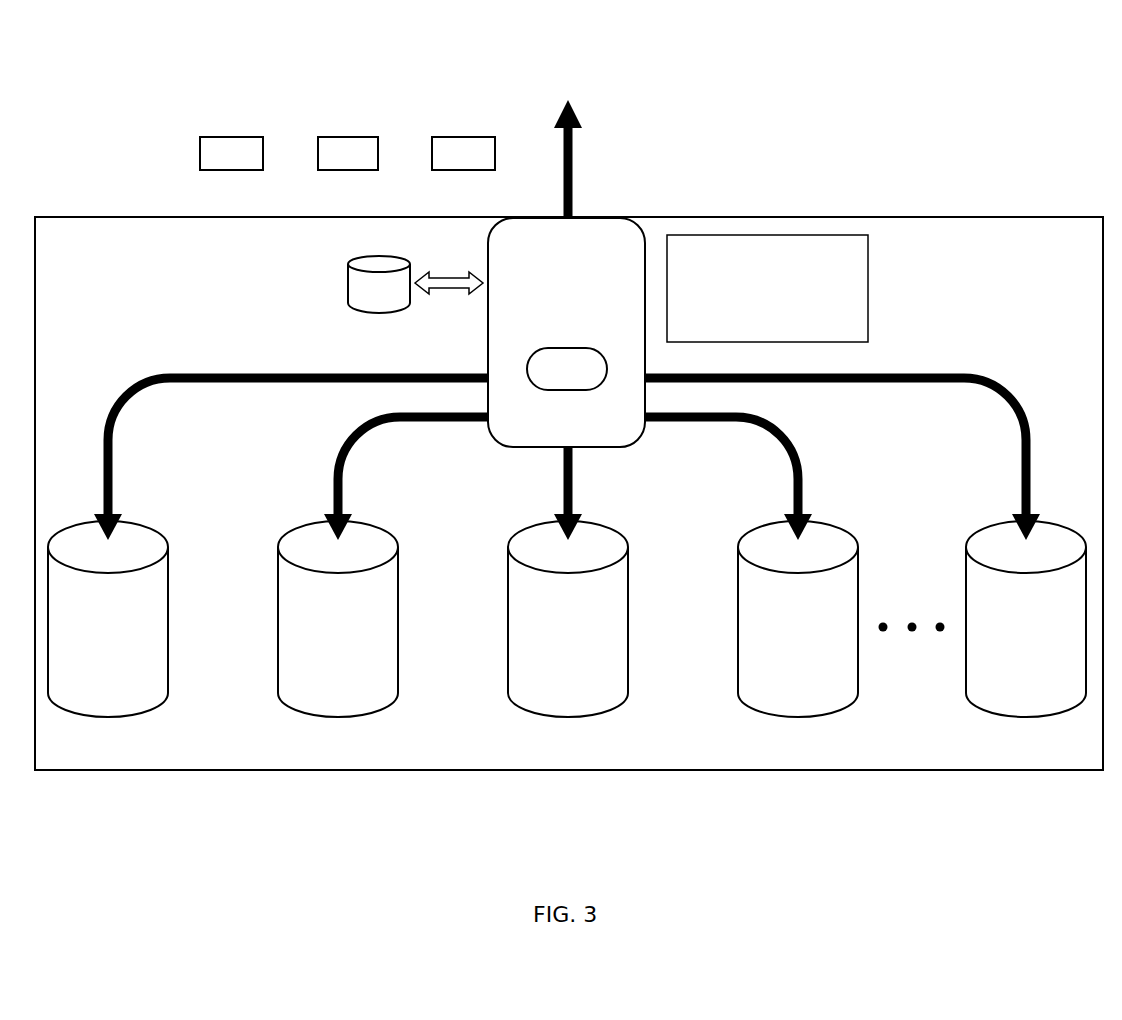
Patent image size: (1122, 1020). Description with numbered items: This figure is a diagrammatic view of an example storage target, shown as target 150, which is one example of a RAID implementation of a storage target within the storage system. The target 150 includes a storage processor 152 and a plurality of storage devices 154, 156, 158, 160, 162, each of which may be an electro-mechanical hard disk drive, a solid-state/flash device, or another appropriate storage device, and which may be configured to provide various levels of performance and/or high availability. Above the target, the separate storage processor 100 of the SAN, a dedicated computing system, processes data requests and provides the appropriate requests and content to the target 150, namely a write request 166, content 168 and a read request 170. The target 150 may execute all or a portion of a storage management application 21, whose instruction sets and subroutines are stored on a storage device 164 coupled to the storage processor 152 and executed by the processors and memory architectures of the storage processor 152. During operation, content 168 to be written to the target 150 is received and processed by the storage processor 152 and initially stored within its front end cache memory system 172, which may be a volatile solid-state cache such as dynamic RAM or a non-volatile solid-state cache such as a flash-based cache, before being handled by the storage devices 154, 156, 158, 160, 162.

The storage processor 100 is at (568, 111).
The target 150 is at (569, 493).
The storage processor 152 is at (566, 332).
The storage device 154 is at (268, 547).
The storage device 156 is at (383, 567).
The storage device 158 is at (568, 582).
The storage device 160 is at (751, 567).
The storage device 162 is at (865, 547).
The storage device 164 is at (379, 284).
The write request 166 is at (200, 158).
The content 168 is at (318, 158).
The read request 170 is at (432, 158).
The cache memory system 172 is at (567, 369).
The storage management application 21 is at (868, 302).